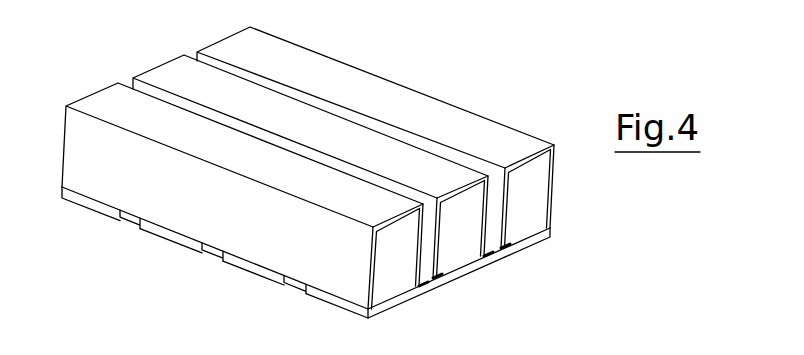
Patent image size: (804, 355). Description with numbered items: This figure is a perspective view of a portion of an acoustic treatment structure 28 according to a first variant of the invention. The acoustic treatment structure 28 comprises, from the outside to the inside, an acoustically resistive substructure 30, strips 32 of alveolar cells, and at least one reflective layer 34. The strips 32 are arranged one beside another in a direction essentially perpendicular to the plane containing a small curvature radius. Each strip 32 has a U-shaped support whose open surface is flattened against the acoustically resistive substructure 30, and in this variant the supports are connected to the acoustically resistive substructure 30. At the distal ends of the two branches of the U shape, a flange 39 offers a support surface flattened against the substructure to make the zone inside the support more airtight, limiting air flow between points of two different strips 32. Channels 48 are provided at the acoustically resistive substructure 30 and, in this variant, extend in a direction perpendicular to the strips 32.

The acoustic treatment structure 28 is at (105, 72).
The acoustically resistive substructure 30 is at (556, 230).
The strip of alveolar cells 32 is at (462, 245).
The reflective layer 34 is at (335, 180).
The flange 39 is at (401, 250).
The channel 48 is at (293, 287).